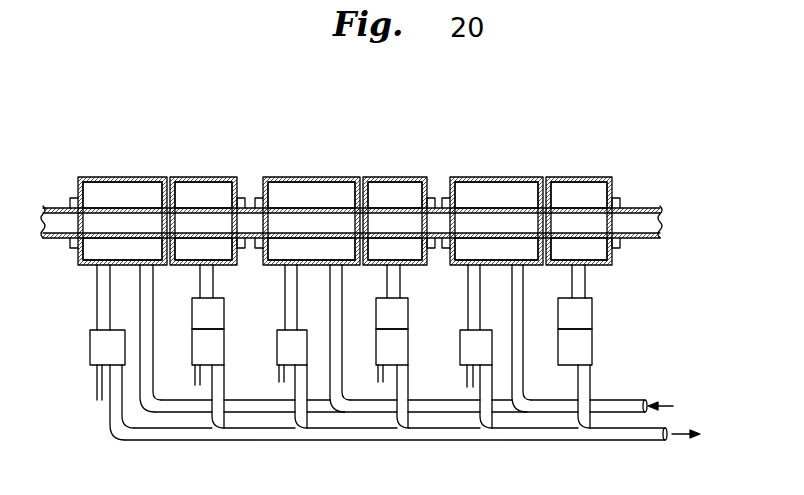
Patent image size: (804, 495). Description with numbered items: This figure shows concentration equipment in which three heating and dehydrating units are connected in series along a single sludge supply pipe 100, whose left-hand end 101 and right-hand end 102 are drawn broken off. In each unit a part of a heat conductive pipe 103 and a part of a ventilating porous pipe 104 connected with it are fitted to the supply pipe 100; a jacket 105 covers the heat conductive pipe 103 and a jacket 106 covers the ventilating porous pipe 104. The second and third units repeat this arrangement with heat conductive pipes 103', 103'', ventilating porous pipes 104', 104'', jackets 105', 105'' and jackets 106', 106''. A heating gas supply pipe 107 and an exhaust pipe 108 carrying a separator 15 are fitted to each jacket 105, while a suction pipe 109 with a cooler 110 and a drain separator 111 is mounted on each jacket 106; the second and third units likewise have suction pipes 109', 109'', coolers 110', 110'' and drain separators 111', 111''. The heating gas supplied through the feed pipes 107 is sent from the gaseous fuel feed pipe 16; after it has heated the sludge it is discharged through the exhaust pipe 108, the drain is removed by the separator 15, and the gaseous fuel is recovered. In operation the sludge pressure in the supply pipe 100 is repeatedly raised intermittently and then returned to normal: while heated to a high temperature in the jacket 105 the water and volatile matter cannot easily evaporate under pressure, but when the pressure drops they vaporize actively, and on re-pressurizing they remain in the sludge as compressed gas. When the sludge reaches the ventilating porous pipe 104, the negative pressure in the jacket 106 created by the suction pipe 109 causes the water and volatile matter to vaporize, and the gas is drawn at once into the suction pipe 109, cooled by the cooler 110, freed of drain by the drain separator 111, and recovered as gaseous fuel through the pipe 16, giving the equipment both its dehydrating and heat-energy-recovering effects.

The supply pipe 100 is at (53, 243).
The pipe inlet portion 101 is at (59, 208).
The pipe outlet portion 102 is at (632, 210).
The heat conductive pipe 103 is at (122, 197).
The ventilating porous pipe 104 is at (205, 196).
The jacket 105 is at (138, 197).
The jacket 106 is at (224, 198).
The heat conductive pipe 103' is at (311, 201).
The ventilating porous pipe 104' is at (395, 195).
The jacket 105' is at (315, 197).
The jacket 106' is at (409, 197).
The heat conductive pipe 103'' is at (496, 193).
The ventilating porous pipe 104'' is at (579, 196).
The jacket 105'' is at (504, 197).
The jacket 106'' is at (602, 198).
The heating gas supply pipe 107 is at (145, 368).
The exhaust pipe 108 is at (97, 308).
The suction pipe 109 is at (238, 283).
The cooler 110 is at (234, 313).
The drain separator 111 is at (234, 378).
The suction pipe 109' is at (427, 283).
The cooler 110' is at (421, 313).
The drain separator 111' is at (424, 378).
The suction pipe 109'' is at (623, 283).
The cooler 110'' is at (616, 313).
The drain separator 111'' is at (616, 378).
The separator 15 is at (100, 357).
The gaseous fuel feed pipe 16 is at (637, 442).